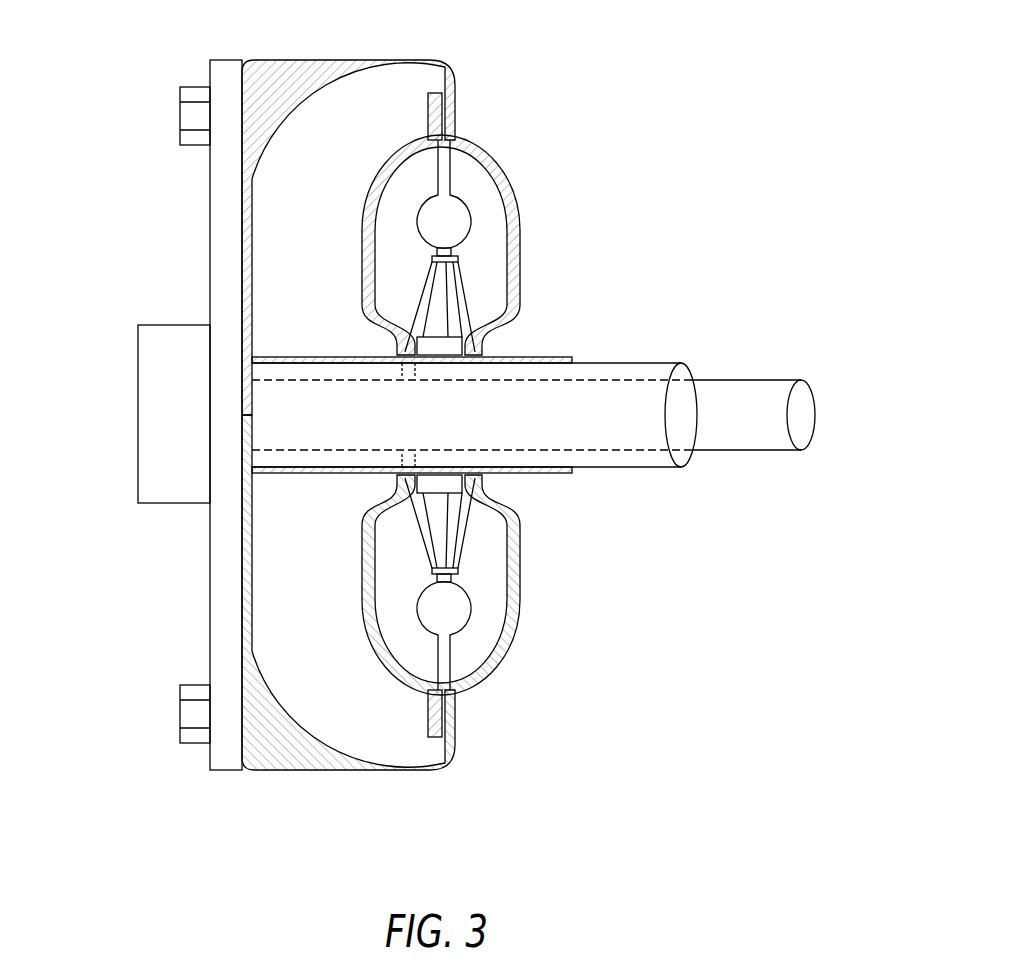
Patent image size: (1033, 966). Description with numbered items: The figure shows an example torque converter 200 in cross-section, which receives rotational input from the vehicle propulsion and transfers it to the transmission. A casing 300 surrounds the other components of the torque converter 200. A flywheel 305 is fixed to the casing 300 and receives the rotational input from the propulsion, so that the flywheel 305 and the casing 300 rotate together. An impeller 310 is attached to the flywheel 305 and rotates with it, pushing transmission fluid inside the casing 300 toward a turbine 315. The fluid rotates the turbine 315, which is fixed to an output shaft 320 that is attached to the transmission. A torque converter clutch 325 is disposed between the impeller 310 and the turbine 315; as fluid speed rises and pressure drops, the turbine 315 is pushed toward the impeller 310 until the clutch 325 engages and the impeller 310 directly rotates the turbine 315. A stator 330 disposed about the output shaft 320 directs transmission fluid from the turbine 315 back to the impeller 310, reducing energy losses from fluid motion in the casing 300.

The torque converter 200 is at (678, 22).
The casing 300 is at (220, 197).
The flywheel 305 is at (177, 365).
The impeller 310 is at (508, 182).
The turbine 315 is at (368, 207).
The output shaft 320 is at (737, 388).
The torque converter clutch 325 is at (445, 112).
The stator 330 is at (437, 303).